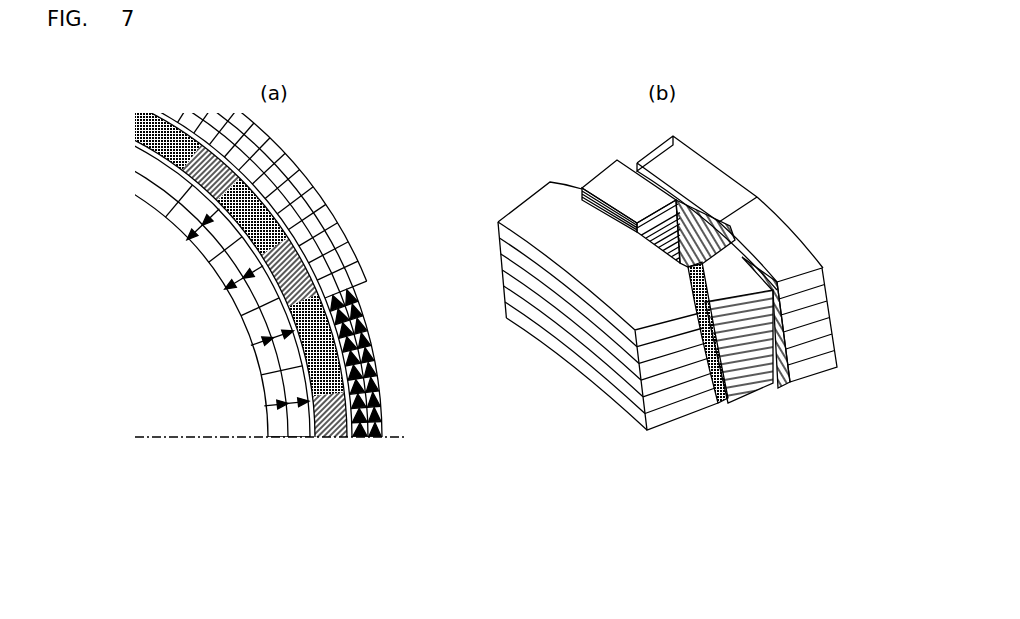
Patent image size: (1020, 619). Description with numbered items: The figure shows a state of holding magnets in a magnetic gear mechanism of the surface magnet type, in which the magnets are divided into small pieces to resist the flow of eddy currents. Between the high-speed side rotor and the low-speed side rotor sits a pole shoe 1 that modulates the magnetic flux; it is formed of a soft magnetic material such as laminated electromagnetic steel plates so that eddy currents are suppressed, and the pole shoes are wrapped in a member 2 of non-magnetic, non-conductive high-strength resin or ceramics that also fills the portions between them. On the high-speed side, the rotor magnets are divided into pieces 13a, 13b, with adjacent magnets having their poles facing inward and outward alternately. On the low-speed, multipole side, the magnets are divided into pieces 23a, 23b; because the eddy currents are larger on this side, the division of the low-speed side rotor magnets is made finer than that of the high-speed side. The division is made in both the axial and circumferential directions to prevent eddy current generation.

The pole shoe 1 is at (300, 282).
The member 2 is at (290, 228).
The magnet 13a is at (222, 320).
The magnet 13b is at (218, 318).
The magnet 23a is at (383, 367).
The magnet 23b is at (365, 293).